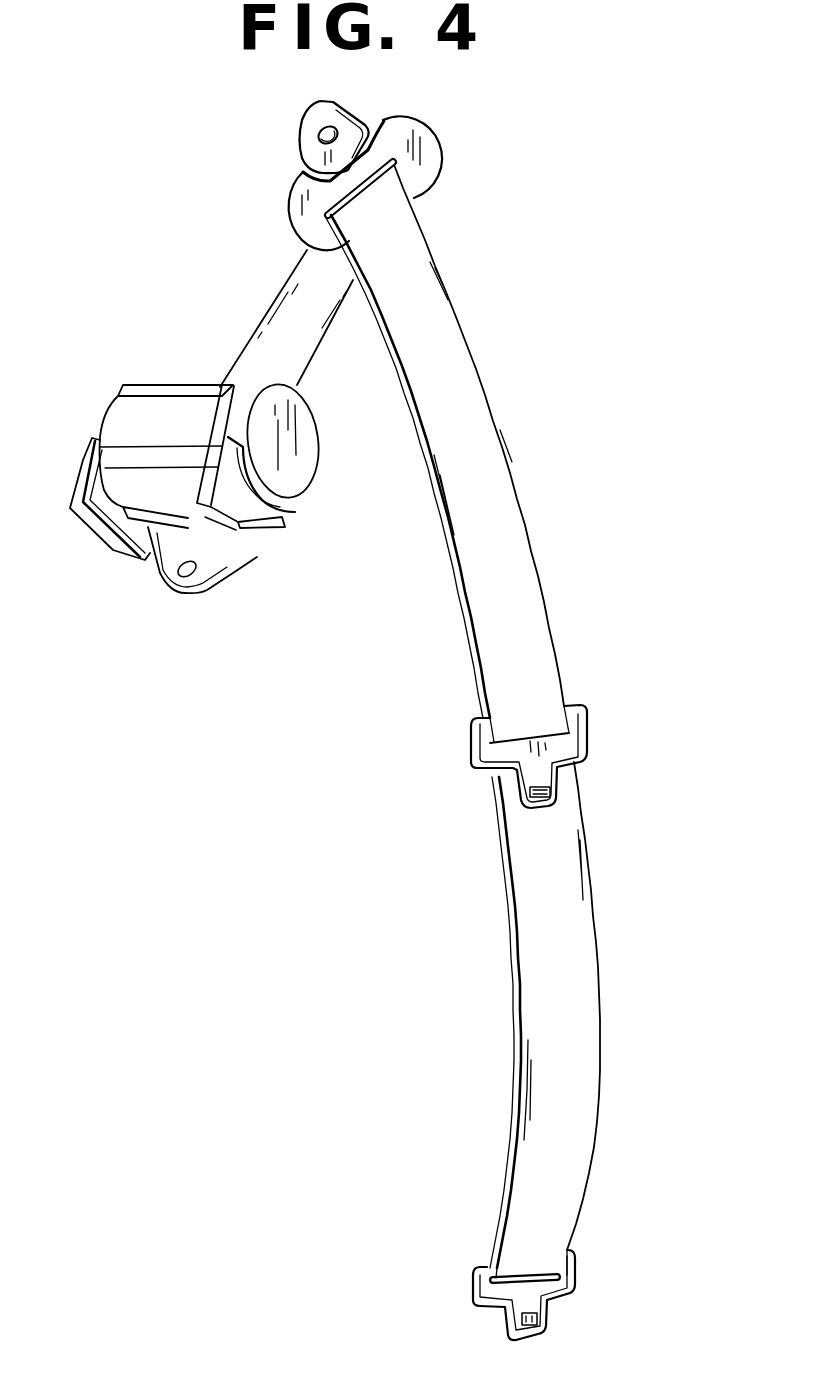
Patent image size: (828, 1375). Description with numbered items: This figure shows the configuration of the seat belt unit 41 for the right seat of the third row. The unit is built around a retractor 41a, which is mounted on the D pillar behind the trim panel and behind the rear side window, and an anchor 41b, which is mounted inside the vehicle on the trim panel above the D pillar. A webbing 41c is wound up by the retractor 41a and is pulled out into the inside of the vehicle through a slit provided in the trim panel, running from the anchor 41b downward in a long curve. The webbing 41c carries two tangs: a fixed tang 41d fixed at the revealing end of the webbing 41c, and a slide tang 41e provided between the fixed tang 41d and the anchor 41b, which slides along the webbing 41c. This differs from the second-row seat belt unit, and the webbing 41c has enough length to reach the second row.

The seat belt unit 41 is at (547, 365).
The retractor 41a is at (303, 493).
The anchor 41b is at (290, 223).
The webbing 41c is at (518, 955).
The fixed tang 41d is at (575, 1280).
The slide tang 41e is at (590, 736).